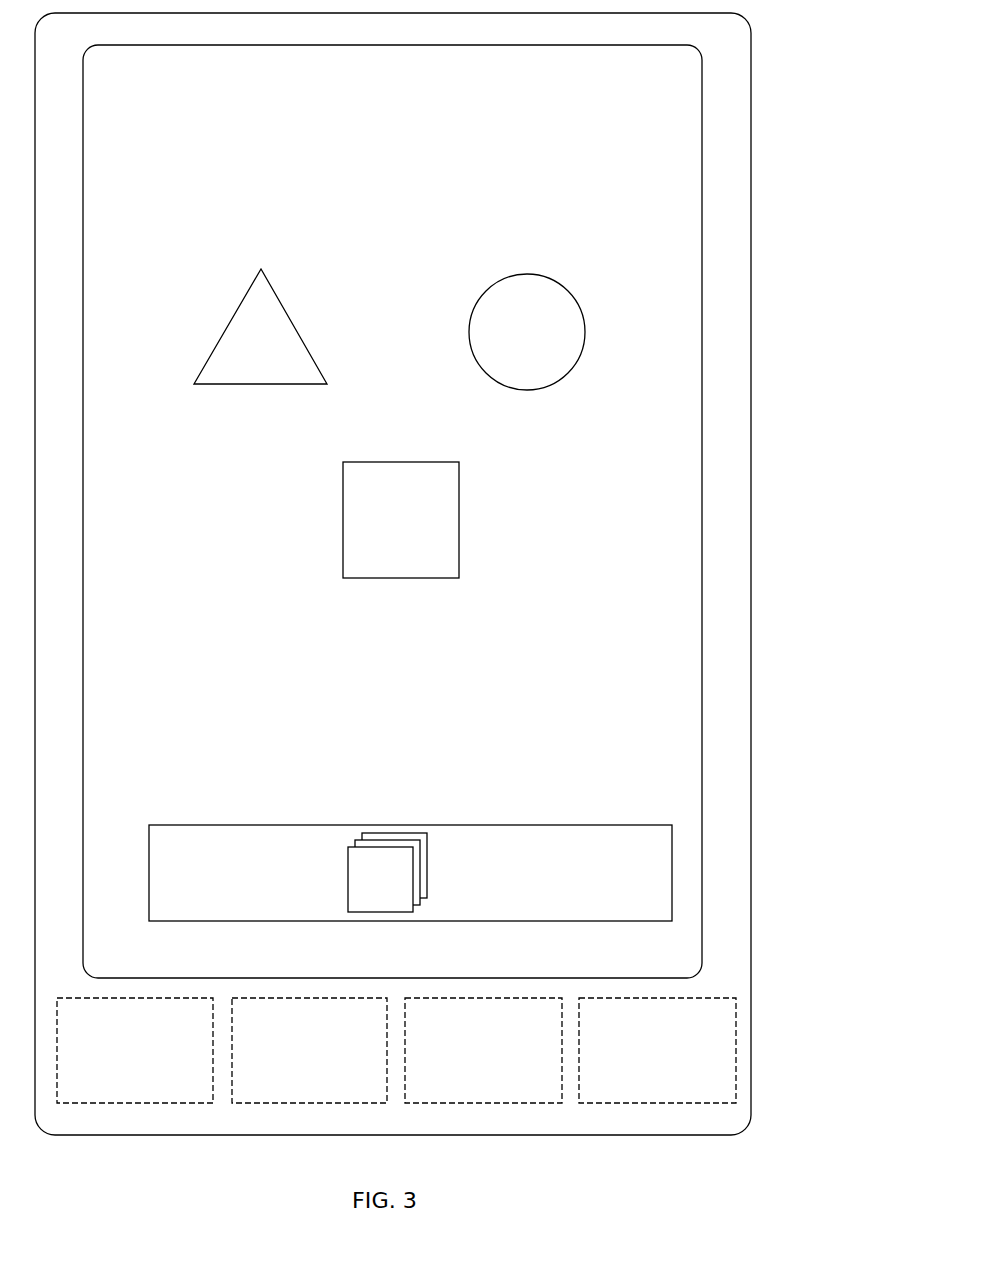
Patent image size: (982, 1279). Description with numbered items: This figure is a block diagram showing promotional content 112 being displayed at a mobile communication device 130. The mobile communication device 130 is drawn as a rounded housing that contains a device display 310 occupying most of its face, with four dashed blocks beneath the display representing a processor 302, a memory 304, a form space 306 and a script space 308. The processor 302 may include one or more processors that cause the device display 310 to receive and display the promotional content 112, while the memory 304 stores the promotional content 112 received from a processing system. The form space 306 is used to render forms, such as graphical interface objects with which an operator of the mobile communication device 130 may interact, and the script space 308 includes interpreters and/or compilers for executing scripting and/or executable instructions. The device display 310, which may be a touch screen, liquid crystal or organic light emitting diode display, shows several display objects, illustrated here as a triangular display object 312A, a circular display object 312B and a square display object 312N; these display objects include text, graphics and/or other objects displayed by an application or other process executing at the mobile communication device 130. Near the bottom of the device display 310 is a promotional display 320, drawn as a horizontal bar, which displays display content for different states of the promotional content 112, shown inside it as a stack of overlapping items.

The mobile communication device 130 is at (752, 121).
The device display 310 is at (538, 99).
The display object 312A is at (233, 357).
The display object 312B is at (499, 344).
The display object 312N is at (373, 532).
The promotional display 320 is at (417, 825).
The promotional content 112 is at (360, 896).
The processor 302 is at (116, 1062).
The memory 304 is at (291, 1062).
The form space 306 is at (465, 1062).
The script space 308 is at (639, 1062).